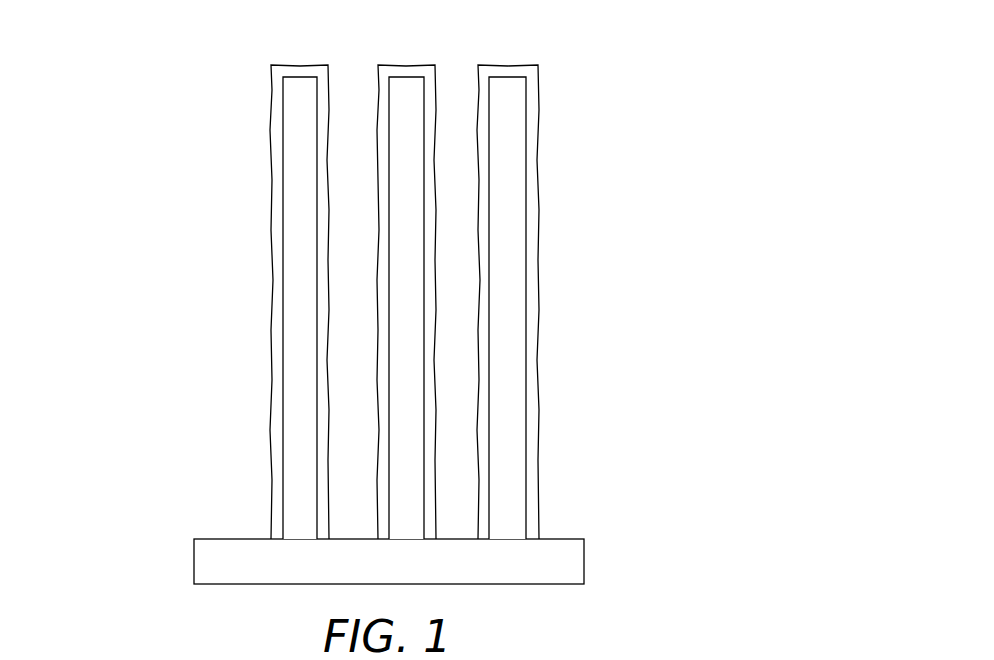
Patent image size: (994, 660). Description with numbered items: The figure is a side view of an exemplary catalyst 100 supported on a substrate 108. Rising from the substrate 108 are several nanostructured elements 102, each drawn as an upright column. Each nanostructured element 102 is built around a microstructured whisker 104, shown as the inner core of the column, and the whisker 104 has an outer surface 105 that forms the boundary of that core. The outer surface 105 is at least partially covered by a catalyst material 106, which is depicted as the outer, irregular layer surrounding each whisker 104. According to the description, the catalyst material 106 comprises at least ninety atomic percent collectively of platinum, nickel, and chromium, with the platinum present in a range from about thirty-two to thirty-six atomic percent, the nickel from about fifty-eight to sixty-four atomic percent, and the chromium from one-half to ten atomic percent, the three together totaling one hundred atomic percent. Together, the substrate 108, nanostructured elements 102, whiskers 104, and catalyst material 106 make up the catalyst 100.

The catalyst 100 is at (374, 299).
The nanostructured elements 102 is at (451, 302).
The microstructured whiskers 104 is at (510, 237).
The outer surface 105 is at (527, 323).
The catalyst material 106 is at (533, 453).
The substrate 108 is at (584, 551).